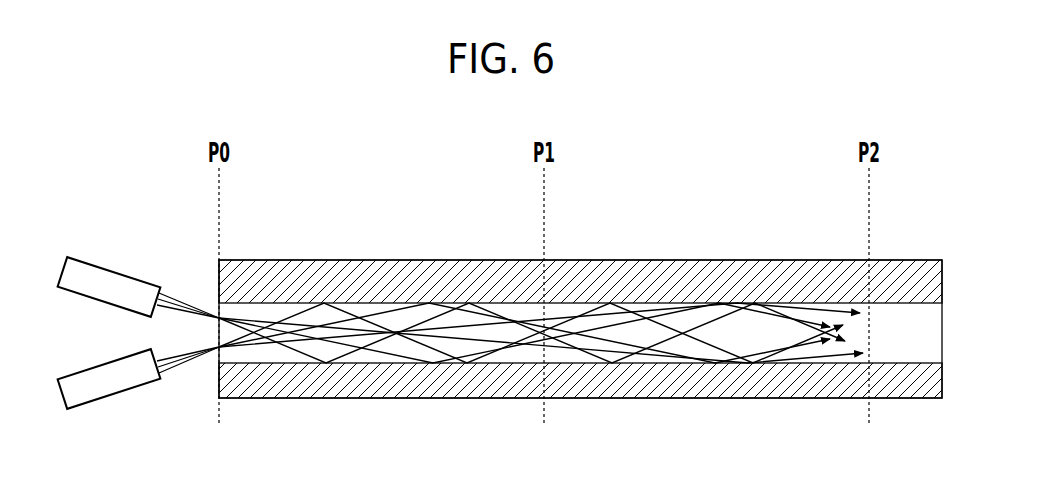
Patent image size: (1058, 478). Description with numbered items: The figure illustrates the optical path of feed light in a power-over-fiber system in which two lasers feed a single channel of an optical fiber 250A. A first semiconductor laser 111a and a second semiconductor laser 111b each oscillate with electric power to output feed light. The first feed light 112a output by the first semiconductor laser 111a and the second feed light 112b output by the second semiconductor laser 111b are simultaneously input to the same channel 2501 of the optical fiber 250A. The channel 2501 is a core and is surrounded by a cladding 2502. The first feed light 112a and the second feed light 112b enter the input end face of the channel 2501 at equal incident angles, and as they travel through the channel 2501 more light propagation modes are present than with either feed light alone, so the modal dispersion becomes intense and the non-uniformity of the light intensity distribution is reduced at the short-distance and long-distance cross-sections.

The first semiconductor laser 111a is at (88, 258).
The second semiconductor laser 111b is at (90, 408).
The first feed light 112a is at (181, 294).
The second feed light 112b is at (180, 371).
The optical fiber 250A is at (390, 260).
The channel 2501 is at (620, 336).
The cladding 2502 is at (707, 276).